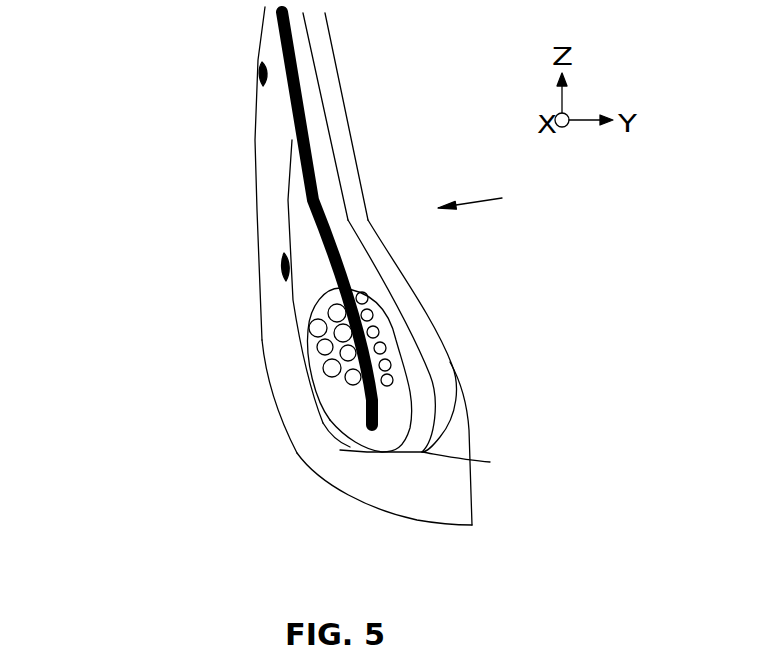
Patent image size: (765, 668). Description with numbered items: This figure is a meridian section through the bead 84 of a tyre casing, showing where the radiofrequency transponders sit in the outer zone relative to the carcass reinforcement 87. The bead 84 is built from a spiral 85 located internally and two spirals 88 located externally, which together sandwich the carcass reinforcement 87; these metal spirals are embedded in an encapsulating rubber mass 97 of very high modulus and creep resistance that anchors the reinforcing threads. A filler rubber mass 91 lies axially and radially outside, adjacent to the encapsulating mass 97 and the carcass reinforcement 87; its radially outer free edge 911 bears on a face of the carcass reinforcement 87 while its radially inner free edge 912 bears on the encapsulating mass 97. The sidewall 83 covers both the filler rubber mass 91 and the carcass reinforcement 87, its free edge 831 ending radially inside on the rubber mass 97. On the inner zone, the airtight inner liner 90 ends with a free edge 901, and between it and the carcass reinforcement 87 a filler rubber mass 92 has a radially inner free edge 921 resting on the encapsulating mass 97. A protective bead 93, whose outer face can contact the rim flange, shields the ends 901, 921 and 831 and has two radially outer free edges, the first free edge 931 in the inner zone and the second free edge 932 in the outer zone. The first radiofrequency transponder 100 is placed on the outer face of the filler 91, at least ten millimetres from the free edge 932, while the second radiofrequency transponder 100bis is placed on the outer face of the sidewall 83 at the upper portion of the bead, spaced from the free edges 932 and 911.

The sidewall 83 is at (268, 147).
The free edge of the sidewall 831 is at (350, 448).
The bead 84 is at (485, 198).
The spiral 85 is at (387, 333).
The carcass reinforcement 87 is at (320, 210).
The spirals 88 is at (330, 347).
The airtight inner liner 90 is at (340, 150).
The free edge of the airtight inner liner 901 is at (488, 462).
The filler rubber mass 91 is at (308, 252).
The radially outer free edge of the filler rubber mass 911 is at (292, 140).
The radially inner free edge of the filler rubber mass 912 is at (350, 430).
The filler rubber mass 92 is at (413, 367).
The radially inner free edge of the filler rubber mass 921 is at (347, 491).
The protective bead 93 is at (413, 500).
The first free edge of the protective bead 931 is at (450, 362).
The second free edge of the protective bead 932 is at (257, 337).
The encapsulating rubber mass 97 is at (393, 425).
The radiofrequency transponder 100 is at (280, 268).
The radiofrequency transponder 100bis is at (257, 72).